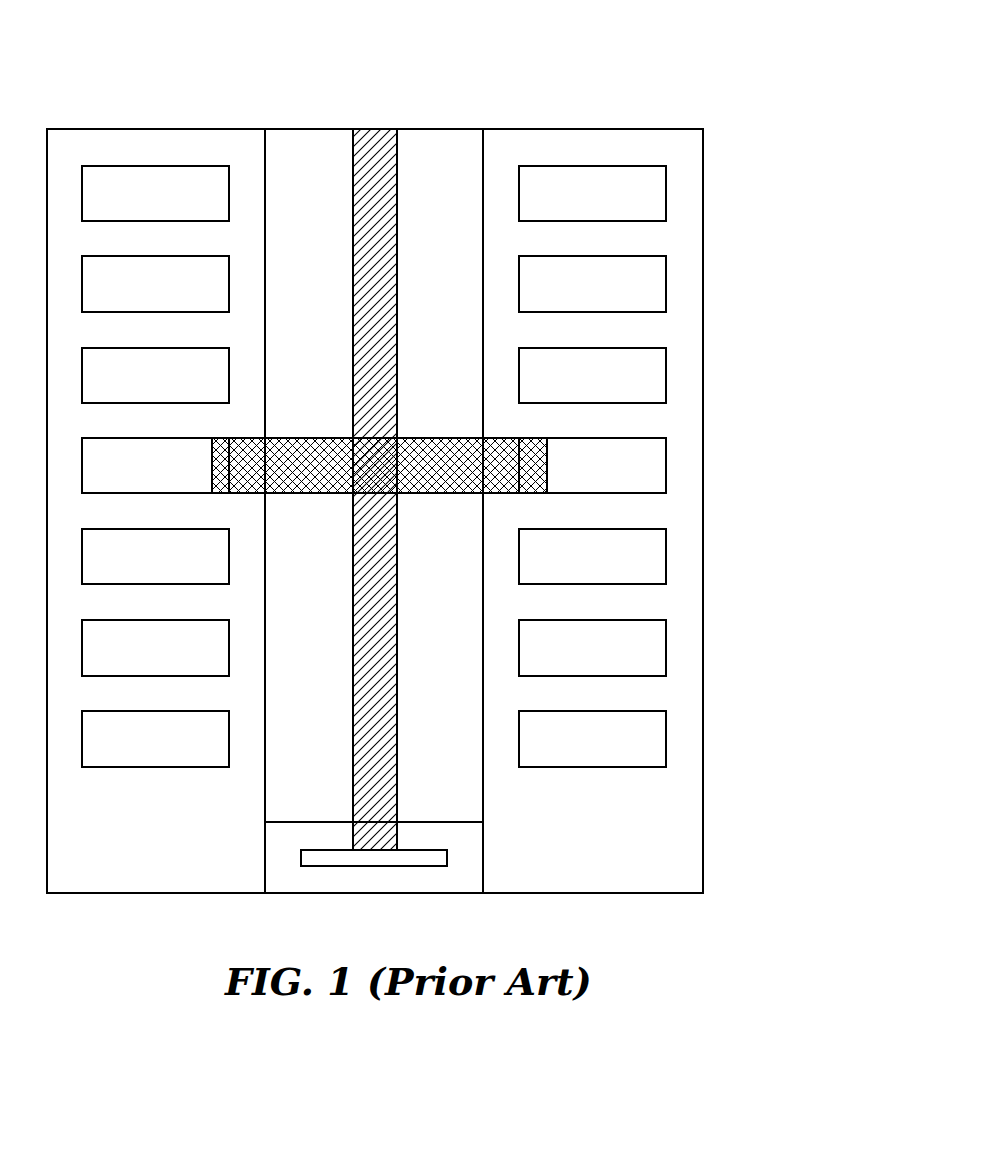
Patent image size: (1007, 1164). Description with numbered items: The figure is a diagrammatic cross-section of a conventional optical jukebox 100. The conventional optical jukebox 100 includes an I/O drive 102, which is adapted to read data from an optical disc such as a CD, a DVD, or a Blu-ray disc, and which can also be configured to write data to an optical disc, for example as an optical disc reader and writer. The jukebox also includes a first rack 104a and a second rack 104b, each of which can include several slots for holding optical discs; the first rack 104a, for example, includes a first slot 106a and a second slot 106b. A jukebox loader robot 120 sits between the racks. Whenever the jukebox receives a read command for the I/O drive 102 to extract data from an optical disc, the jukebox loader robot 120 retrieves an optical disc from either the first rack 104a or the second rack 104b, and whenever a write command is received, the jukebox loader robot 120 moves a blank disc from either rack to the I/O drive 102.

The conventional optical jukebox 100 is at (720, 122).
The I/O drive 102 is at (288, 858).
The first rack 104a is at (173, 473).
The second rack 104b is at (593, 124).
The first slot 106a is at (188, 204).
The second slot 106b is at (188, 294).
The jukebox loader robot 120 is at (390, 156).